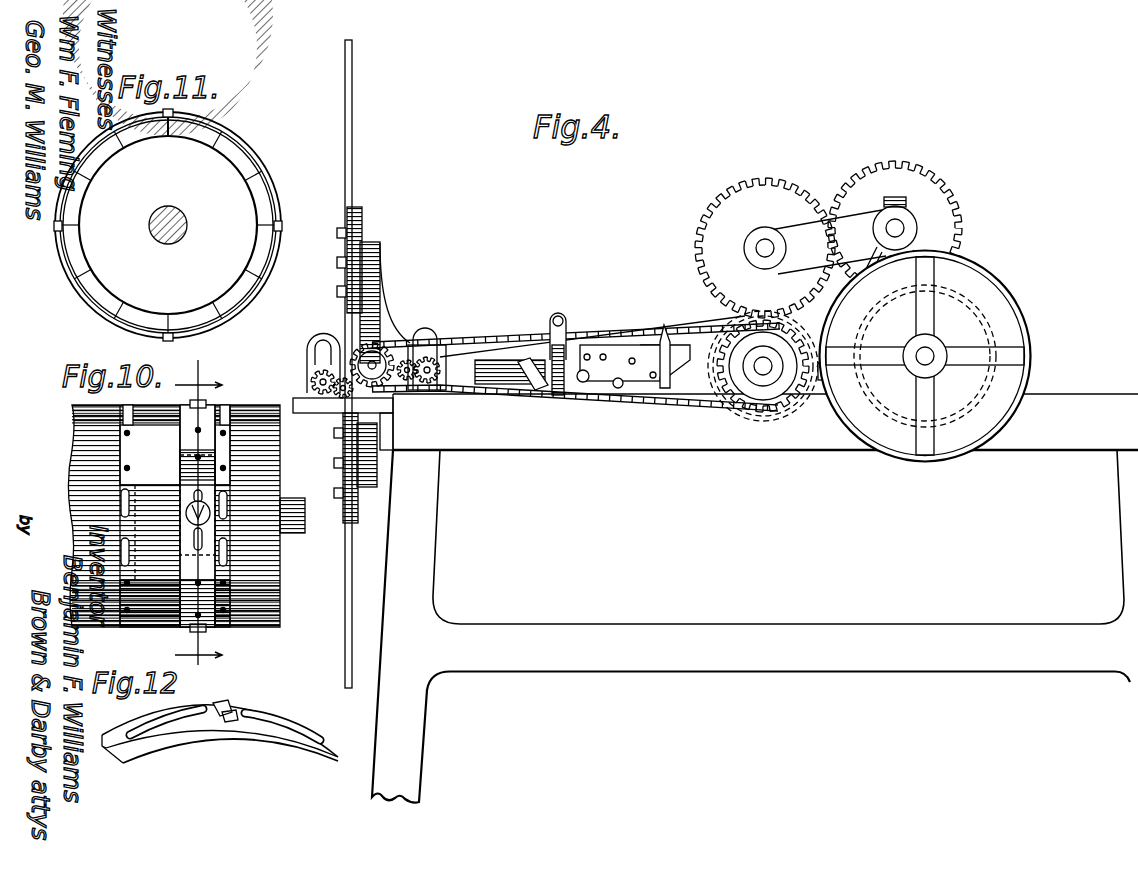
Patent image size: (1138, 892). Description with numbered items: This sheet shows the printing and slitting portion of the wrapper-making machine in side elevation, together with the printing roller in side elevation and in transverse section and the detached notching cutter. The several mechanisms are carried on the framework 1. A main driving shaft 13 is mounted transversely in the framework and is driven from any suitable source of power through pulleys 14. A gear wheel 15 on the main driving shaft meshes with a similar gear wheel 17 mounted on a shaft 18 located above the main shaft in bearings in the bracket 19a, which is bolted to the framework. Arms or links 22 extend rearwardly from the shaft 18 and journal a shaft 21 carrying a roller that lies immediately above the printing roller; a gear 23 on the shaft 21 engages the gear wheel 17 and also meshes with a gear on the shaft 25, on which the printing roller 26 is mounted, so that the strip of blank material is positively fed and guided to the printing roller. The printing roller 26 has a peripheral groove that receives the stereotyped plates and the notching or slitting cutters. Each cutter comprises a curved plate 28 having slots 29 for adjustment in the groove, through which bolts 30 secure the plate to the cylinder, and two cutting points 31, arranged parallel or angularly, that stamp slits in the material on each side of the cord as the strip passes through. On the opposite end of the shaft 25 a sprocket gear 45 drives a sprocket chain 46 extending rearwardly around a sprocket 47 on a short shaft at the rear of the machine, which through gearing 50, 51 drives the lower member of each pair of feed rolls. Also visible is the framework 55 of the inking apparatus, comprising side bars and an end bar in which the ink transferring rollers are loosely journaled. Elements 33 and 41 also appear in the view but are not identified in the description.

In FIG. 4, the framework 1 is at (436, 541).
In FIG. 4, the main driving shaft 13 is at (921, 352).
In FIG. 4, the pulleys 14 is at (1022, 313).
In FIG. 4, the gear wheel 15 is at (976, 318).
In FIG. 4, the gear wheel 17 is at (943, 210).
In FIG. 4, the shaft 18 is at (897, 226).
In FIG. 4, the bracket 19a is at (945, 285).
In FIG. 4, the shaft 21 is at (757, 248).
In FIG. 4, the arms or links 22 is at (828, 242).
In FIG. 4, the gear 23 is at (765, 248).
In FIG. 10, the shaft 25 is at (292, 500).
In FIG. 4, the shaft 25 is at (761, 372).
In FIG. 11, the printing roller 26 is at (247, 157).
In FIG. 10, the printing roller 26 is at (257, 407).
In FIG. 10, the curved plate 28 is at (122, 500).
In FIG. 12, the curved plate 28 is at (243, 708).
In FIG. 11, the slots 29 is at (187, 124).
In FIG. 10, the slots 29 is at (122, 522).
In FIG. 12, the slots 29 is at (285, 718).
In FIG. 11, the bolts 30 is at (193, 135).
In FIG. 10, the bolts 30 is at (130, 494).
In FIG. 10, the cutting points 31 is at (187, 520).
In FIG. 12, the cutting points 31 is at (222, 702).
In FIG. 4, the rack 33 is at (363, 222).
In FIG. 4, the standard bar 41 is at (352, 147).
In FIG. 4, the sprocket gear 45 is at (770, 395).
In FIG. 4, the sprocket chain 46 is at (621, 404).
In FIG. 4, the sprocket 47 is at (378, 356).
In FIG. 4, the gearing 50 is at (431, 388).
In FIG. 4, the gearing 51 is at (335, 392).
In FIG. 4, the framework 55 is at (600, 360).